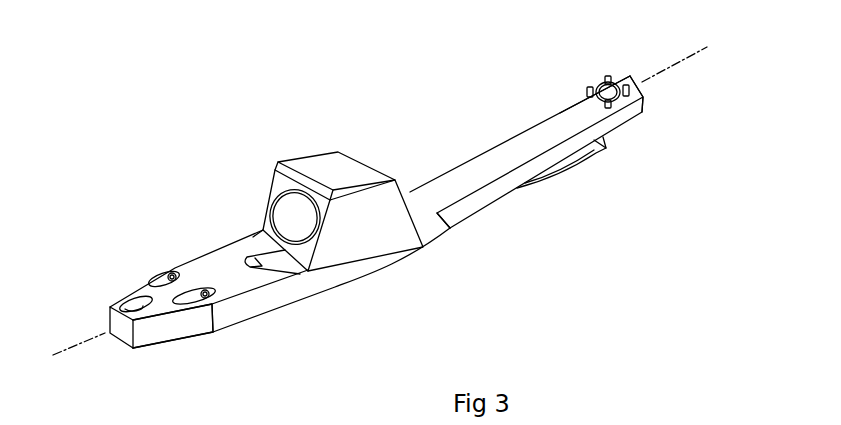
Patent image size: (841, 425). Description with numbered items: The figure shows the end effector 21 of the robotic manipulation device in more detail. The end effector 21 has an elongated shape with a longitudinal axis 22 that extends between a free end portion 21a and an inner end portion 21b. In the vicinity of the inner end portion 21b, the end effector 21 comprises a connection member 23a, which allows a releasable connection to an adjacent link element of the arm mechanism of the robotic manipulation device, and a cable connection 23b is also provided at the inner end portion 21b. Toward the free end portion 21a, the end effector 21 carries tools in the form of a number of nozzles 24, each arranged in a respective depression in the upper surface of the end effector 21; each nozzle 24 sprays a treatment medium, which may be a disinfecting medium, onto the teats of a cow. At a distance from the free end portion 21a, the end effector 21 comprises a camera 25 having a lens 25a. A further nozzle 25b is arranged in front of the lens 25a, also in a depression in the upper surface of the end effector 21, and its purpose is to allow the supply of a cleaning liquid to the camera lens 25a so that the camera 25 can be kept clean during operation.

The end effector 21 is at (217, 158).
The free end portion 21a is at (123, 332).
The inner end portion 21b is at (625, 86).
The longitudinal axis 22 is at (668, 68).
The connection member 23a is at (597, 83).
The cable connection 23b is at (593, 147).
The nozzle 24 is at (203, 290).
The camera 25 is at (338, 175).
The lens 25a is at (295, 213).
The nozzle 25b is at (270, 263).